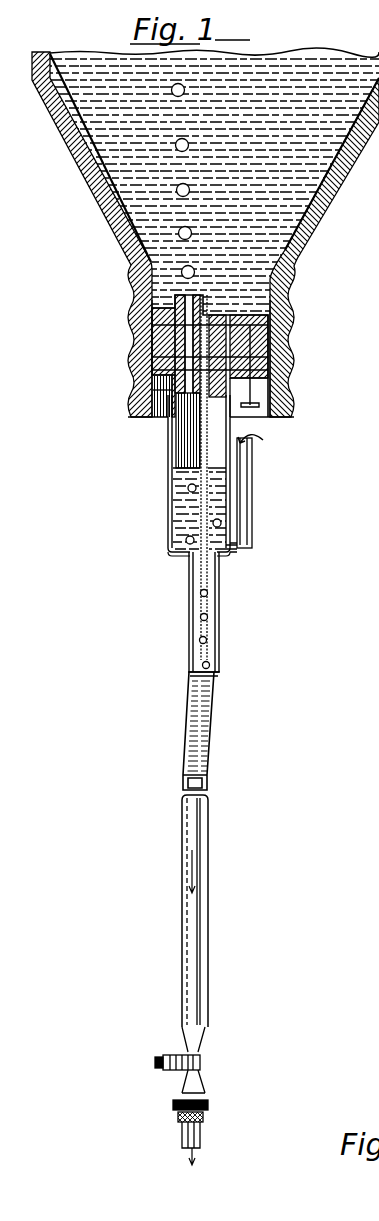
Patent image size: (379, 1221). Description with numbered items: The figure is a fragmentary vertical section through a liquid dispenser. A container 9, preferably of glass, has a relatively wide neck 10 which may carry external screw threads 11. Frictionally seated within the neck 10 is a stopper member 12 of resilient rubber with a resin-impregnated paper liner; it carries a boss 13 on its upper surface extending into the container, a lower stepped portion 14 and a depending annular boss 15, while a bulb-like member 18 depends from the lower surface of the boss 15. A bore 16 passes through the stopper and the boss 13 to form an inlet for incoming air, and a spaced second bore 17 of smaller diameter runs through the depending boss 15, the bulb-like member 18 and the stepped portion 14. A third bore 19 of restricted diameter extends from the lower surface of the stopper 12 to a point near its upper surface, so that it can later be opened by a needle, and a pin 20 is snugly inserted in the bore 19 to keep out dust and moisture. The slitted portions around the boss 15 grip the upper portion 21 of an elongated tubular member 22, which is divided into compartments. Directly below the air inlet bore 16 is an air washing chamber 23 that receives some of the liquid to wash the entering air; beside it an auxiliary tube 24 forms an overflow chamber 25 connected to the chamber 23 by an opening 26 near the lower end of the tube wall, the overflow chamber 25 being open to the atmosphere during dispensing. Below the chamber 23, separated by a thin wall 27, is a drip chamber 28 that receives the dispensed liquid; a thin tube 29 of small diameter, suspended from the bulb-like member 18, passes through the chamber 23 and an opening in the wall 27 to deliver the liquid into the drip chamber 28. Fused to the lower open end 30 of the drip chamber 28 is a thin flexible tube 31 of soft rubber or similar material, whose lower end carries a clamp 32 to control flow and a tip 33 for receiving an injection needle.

The container 9 is at (312, 223).
The neck 10 is at (292, 285).
The external screw threads 11 is at (290, 348).
The stopper member 12 is at (133, 323).
The boss 13 is at (133, 288).
The lower stepped portion 14 is at (283, 309).
The depending annular boss 15 is at (132, 398).
The bore 16 is at (128, 358).
The second bore 17 is at (290, 362).
The bulb-like member 18 is at (197, 412).
The third bore 19 is at (210, 345).
The pin 20 is at (252, 390).
The upper portion 21 is at (130, 375).
The tubular member 22 is at (160, 531).
The air washing chamber 23 is at (178, 485).
The auxiliary tube 24 is at (252, 503).
The overflow chamber 25 is at (240, 482).
The opening 26 is at (252, 547).
The thin wall 27 is at (182, 553).
The drip chamber 28 is at (212, 603).
The thin tube 29 is at (272, 439).
The lower open end 30 is at (190, 673).
The thin tube 31 is at (188, 742).
The clamp 32 is at (162, 1053).
The tip 33 is at (208, 1110).